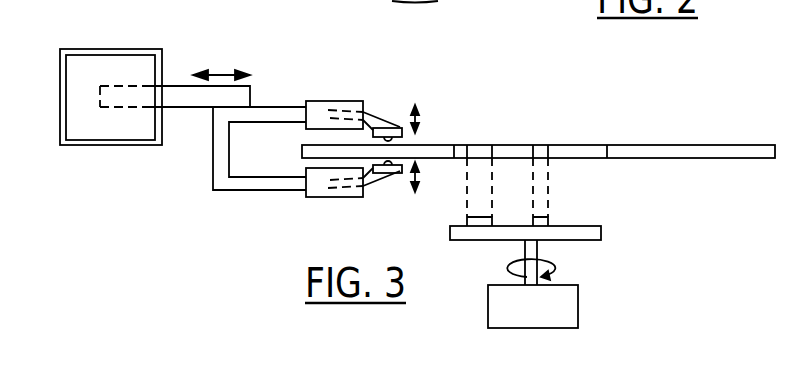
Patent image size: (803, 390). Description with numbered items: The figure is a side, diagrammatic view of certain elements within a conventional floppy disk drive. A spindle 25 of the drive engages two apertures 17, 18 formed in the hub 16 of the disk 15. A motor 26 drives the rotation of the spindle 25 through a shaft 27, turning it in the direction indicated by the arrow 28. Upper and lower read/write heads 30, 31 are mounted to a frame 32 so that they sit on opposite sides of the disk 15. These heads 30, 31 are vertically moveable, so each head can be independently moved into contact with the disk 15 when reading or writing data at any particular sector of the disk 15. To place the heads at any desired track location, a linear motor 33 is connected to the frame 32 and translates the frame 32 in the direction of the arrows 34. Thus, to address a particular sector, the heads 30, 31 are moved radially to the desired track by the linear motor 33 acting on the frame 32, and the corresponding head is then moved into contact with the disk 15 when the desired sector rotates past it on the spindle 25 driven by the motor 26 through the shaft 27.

The disk 15 is at (728, 144).
The hub 16 is at (583, 147).
The aperture 17 is at (548, 157).
The aperture 18 is at (492, 157).
The spindle 25 is at (601, 231).
The motor 26 is at (580, 305).
The shaft 27 is at (537, 249).
The arrow 28 is at (552, 267).
The upper read/write head 30 is at (382, 121).
The lower read/write head 31 is at (383, 182).
The frame 32 is at (250, 190).
The linear motor 33 is at (100, 145).
The arrows 34 is at (225, 75).